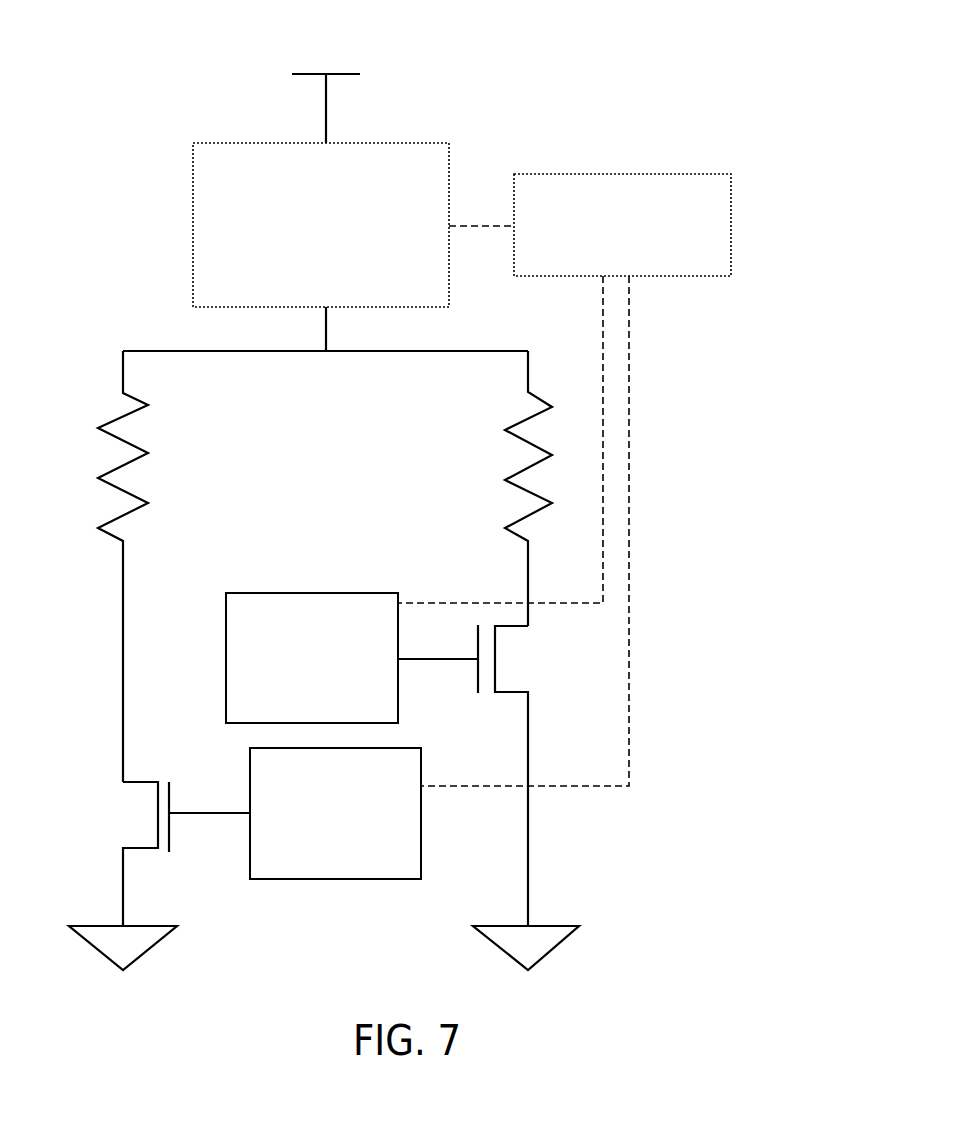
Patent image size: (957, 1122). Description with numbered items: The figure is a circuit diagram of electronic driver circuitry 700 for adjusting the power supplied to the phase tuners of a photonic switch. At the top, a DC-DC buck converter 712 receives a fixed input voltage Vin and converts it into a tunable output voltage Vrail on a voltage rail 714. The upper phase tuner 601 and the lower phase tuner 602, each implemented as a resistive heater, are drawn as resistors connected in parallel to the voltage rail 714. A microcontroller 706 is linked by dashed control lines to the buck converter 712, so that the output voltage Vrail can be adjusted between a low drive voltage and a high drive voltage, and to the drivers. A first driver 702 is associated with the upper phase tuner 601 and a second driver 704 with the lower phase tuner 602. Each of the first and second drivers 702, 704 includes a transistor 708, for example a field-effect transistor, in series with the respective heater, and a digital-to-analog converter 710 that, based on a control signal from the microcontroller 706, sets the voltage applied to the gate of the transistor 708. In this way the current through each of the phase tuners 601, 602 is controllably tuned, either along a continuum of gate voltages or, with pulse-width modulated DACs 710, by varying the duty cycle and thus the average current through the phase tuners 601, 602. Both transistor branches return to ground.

The electronic driver circuitry 700 is at (668, 52).
The DC-DC buck converter 712 is at (222, 143).
The microcontroller 706 is at (700, 174).
The voltage rail 714 is at (490, 351).
The upper phase tuner 601 is at (110, 421).
The lower phase tuner 602 is at (513, 473).
The digital-to-analog converter (DAC) 710 is at (285, 593).
The transistor 708 is at (478, 693).
The second driver 704 is at (510, 580).
The first driver 702 is at (116, 785).